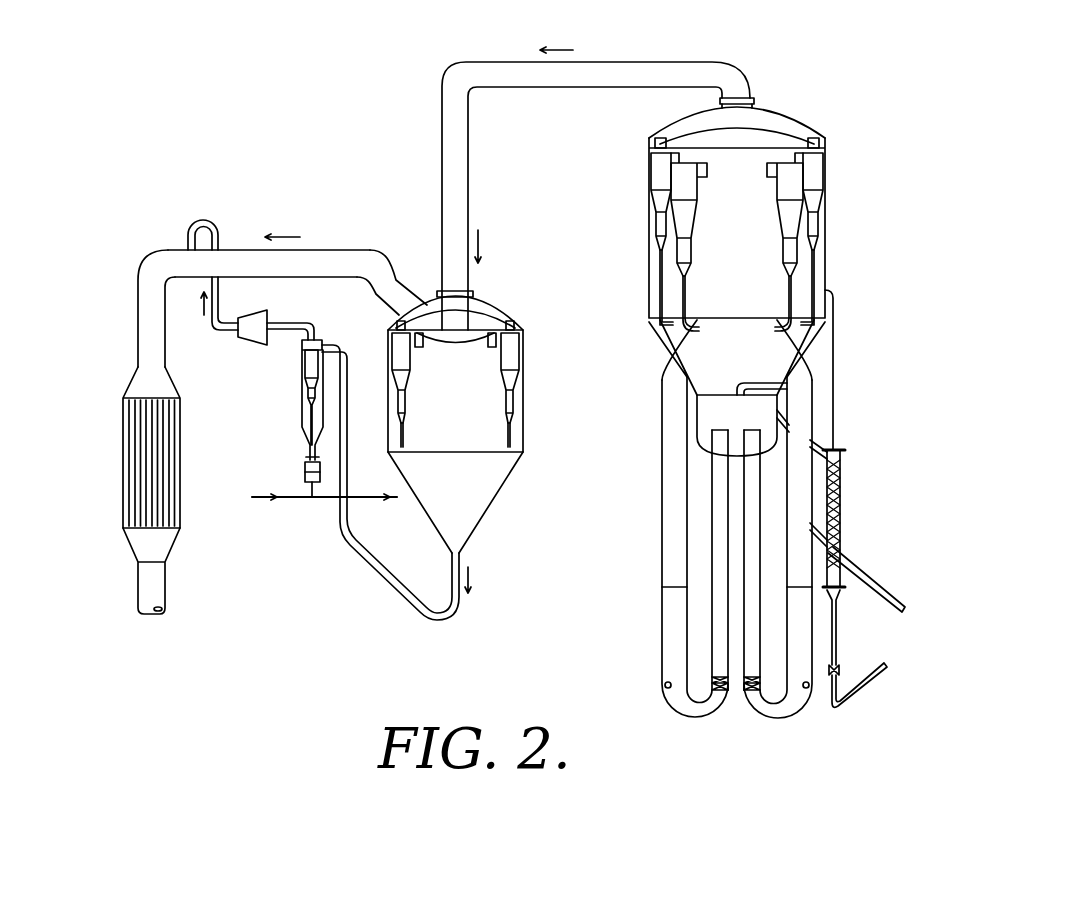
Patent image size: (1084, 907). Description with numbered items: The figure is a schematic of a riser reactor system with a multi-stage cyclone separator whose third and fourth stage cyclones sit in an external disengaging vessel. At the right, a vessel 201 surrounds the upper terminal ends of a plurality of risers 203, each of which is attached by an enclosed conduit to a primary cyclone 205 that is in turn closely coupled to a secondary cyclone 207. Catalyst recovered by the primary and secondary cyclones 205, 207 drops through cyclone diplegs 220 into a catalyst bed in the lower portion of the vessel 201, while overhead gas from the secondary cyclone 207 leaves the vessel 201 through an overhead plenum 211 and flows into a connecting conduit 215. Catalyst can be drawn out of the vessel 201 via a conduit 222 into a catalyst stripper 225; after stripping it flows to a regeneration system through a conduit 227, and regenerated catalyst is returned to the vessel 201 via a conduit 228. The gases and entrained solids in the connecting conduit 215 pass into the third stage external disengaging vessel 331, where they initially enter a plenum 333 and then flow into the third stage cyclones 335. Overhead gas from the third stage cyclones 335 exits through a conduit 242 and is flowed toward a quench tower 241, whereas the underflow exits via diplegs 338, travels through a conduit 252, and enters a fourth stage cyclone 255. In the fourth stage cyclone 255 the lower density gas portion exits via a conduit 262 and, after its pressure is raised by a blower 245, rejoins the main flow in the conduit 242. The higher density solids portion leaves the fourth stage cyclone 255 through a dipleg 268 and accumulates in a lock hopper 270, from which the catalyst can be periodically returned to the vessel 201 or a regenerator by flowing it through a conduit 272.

The vessel 201 is at (827, 267).
The risers 203 is at (662, 547).
The primary cyclone 205 is at (800, 250).
The secondary cyclone 207 is at (826, 203).
The overhead plenum 211 is at (780, 116).
The connecting conduit 215 is at (640, 62).
The cyclone diplegs 220 is at (793, 305).
The conduit 222 is at (872, 430).
The catalyst stripper 225 is at (842, 496).
The conduit 227 is at (866, 680).
The conduit 228 is at (912, 585).
The quench tower 241 is at (123, 467).
The conduit 242 is at (314, 250).
The blower 245 is at (250, 340).
The conduit 252 is at (424, 617).
The fourth stage cyclone 255 is at (303, 360).
The conduit 262 is at (290, 326).
The dipleg 268 is at (303, 418).
The lock hopper 270 is at (305, 480).
The conduit 272 is at (355, 498).
The third stage external disengaging vessel 331 is at (490, 507).
The plenum 333 is at (473, 334).
The third stage cyclones 335 is at (513, 352).
The diplegs 338 is at (513, 433).